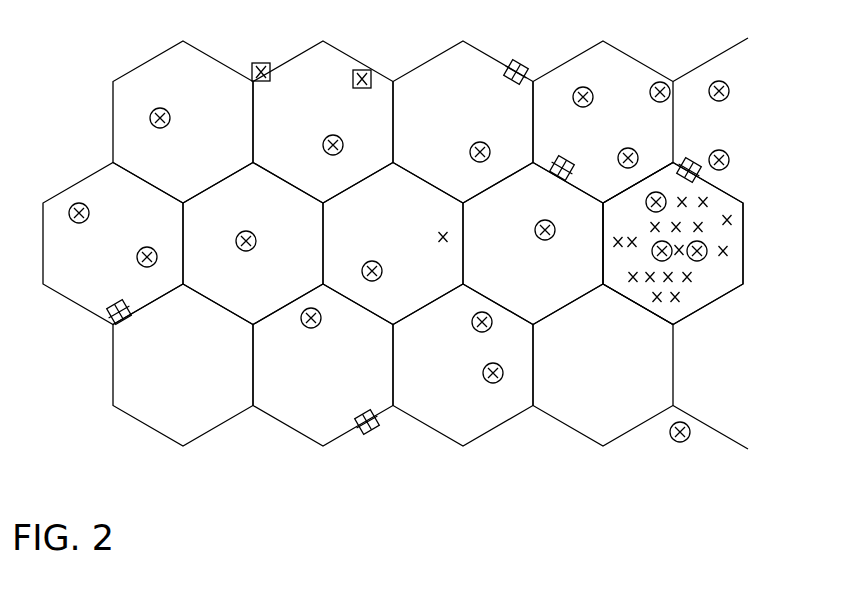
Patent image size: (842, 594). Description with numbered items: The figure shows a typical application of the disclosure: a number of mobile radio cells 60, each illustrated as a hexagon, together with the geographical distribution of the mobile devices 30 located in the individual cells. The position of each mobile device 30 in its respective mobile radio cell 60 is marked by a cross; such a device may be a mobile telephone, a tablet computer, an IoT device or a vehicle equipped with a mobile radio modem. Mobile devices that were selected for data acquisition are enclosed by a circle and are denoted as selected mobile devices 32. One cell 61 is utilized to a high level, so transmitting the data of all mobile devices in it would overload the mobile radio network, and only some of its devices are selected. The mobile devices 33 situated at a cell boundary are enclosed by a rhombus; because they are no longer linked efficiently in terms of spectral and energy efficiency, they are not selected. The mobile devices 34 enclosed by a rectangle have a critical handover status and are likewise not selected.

The mobile device 30 is at (438, 237).
The selected mobile device 32 is at (666, 83).
The cell-boundary mobile device 33 is at (520, 63).
The critical-handover mobile device 34 is at (258, 61).
The mobile radio cell 60 is at (173, 423).
The highly utilized cell 61 is at (709, 297).